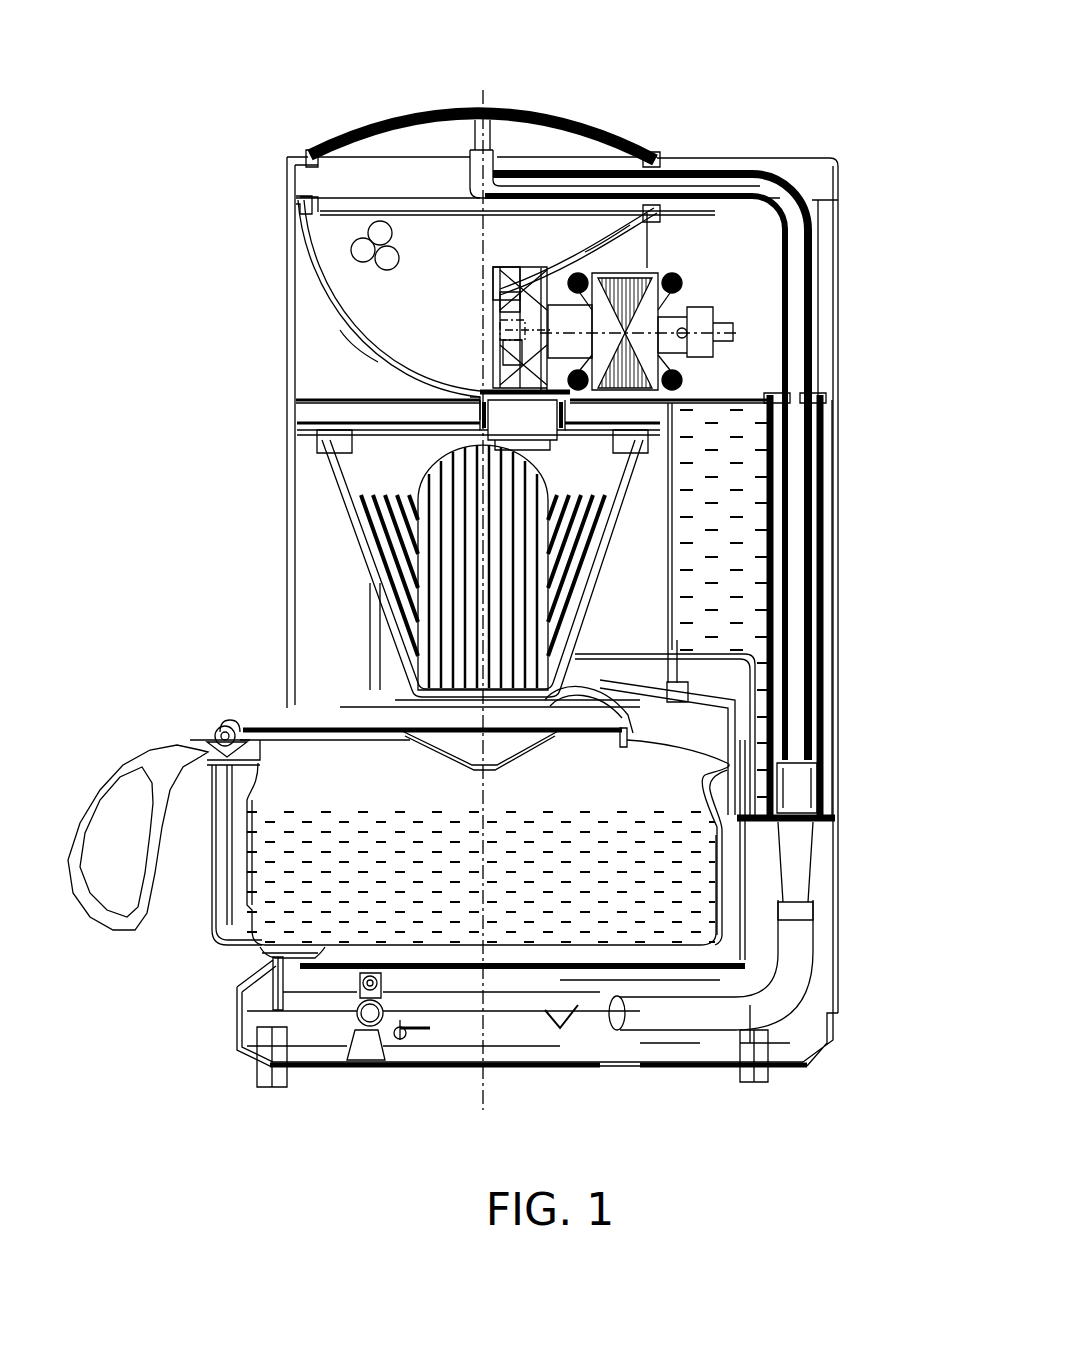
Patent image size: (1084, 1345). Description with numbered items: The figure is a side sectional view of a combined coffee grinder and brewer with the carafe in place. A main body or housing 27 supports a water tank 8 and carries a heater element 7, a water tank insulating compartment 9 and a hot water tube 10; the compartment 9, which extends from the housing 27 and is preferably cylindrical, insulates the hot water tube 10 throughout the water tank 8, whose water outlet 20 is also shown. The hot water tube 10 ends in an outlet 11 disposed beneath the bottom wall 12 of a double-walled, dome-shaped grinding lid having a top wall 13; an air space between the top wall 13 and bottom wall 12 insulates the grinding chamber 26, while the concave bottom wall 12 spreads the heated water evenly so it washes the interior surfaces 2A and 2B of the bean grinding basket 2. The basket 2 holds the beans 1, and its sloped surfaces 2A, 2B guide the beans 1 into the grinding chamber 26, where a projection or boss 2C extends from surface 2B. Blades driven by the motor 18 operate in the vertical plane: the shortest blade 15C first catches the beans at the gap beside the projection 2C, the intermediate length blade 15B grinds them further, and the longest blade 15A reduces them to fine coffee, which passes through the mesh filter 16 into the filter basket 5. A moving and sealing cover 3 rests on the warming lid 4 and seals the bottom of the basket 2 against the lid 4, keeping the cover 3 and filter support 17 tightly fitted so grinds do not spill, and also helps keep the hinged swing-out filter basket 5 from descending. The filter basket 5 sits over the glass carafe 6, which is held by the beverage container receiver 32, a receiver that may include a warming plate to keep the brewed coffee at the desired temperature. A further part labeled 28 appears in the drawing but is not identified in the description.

The beans to be ground 1 is at (355, 248).
The bean grinding basket 2 is at (332, 300).
The interior surface of the grinding basket 2A is at (360, 326).
The interior surface of the grinding basket 2B is at (617, 240).
The projection or boss 2C is at (500, 330).
The moving and sealing cover 3 is at (472, 397).
The warming lid 4 is at (455, 420).
The filter basket 5 is at (357, 545).
The glass carafe 6 is at (247, 800).
The heater element 7 is at (588, 1020).
The water tank 8 is at (838, 687).
The water tank insulating compartment 9 is at (825, 467).
The hot water tube 10 is at (812, 278).
The water outlet 11 is at (485, 147).
The bottom wall of the double-walled grinding lid 12 is at (523, 110).
The top wall of the double-walled grinding lid 13 is at (467, 108).
The longest blade 15A is at (533, 280).
The intermediate length blade 15B is at (497, 272).
The shortest blade 15C is at (510, 347).
The mesh filter 16 is at (487, 380).
The filter support 17 is at (483, 400).
The motor 18 is at (672, 283).
The water outlet 20 is at (688, 1017).
The grinding chamber 26 is at (497, 300).
The main body or housing 27 is at (843, 917).
The housing bracket 28 is at (305, 195).
The beverage container receiver 32 is at (812, 981).